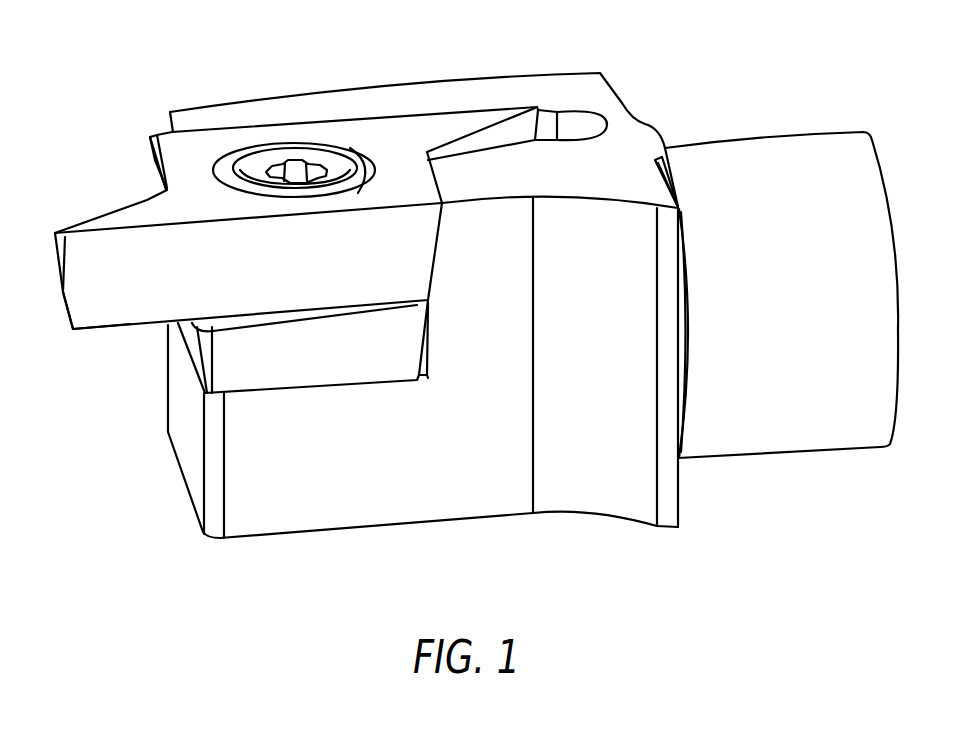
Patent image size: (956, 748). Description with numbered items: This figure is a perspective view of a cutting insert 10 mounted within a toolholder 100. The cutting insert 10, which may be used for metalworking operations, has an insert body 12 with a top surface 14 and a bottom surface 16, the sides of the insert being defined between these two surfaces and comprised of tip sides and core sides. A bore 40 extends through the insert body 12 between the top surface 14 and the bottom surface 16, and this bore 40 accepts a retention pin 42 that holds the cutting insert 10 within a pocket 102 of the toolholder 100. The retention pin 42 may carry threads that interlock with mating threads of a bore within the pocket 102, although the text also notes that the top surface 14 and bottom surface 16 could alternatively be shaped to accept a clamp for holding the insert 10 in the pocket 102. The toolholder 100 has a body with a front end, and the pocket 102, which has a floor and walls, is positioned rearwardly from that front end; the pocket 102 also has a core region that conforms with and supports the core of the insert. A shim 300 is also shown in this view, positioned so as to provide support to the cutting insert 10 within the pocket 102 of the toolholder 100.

The cutting insert 10 is at (264, 280).
The insert body 12 is at (177, 150).
The top surface 14 is at (173, 170).
The bottom surface 16 is at (127, 330).
The bore 40 is at (347, 155).
The retention pin 42 is at (253, 165).
The toolholder 100 is at (575, 90).
The pocket 102 is at (428, 368).
The shim 300 is at (258, 382).